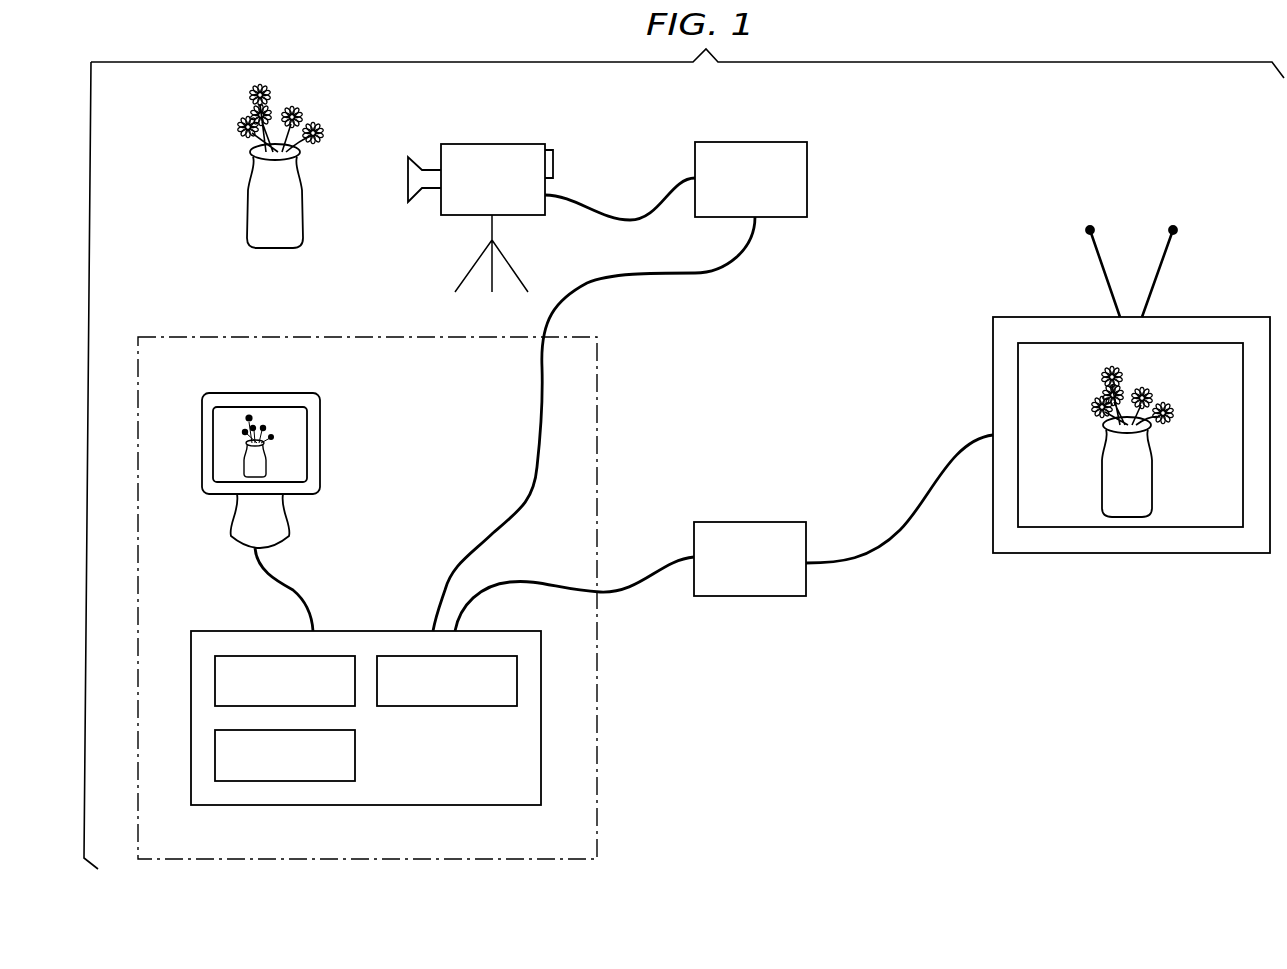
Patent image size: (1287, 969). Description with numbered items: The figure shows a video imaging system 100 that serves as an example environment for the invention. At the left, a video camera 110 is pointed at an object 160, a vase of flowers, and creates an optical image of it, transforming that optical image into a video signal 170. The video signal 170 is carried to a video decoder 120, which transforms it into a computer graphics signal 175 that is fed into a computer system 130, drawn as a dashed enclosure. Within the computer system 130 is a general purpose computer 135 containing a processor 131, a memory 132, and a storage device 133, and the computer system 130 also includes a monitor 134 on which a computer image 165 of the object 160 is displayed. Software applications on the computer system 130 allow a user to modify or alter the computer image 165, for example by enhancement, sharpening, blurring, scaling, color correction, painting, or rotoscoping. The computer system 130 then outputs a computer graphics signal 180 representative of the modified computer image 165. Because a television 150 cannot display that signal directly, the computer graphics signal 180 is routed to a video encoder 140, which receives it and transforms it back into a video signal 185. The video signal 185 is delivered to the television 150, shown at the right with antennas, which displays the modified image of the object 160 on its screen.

The video imaging system 100 is at (899, 682).
The video camera 110 is at (492, 144).
The video decoder 120 is at (745, 142).
The computer system 130 is at (365, 337).
The processor 131 is at (215, 678).
The memory 132 is at (215, 757).
The storage device 133 is at (447, 706).
The monitor 134 is at (322, 443).
The general purpose computer 135 is at (362, 631).
The video encoder 140 is at (746, 522).
The television 150 is at (1027, 317).
The object 160 is at (248, 210).
The computer image 165 is at (220, 455).
The video signal 170 is at (627, 217).
The computer graphics signal 175 is at (703, 273).
The computer graphics signal 180 is at (636, 597).
The video signal 185 is at (920, 512).